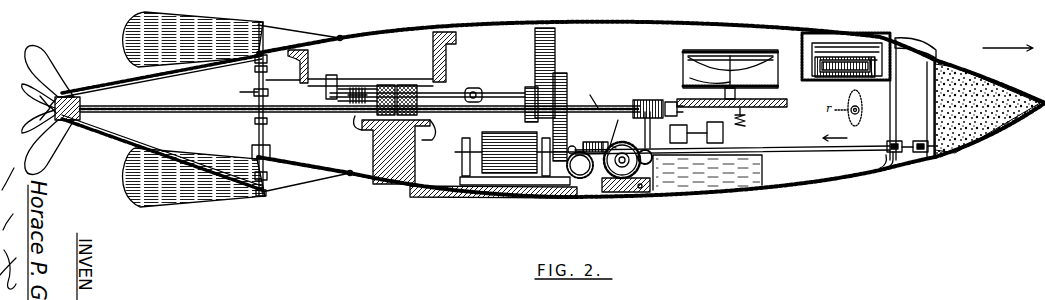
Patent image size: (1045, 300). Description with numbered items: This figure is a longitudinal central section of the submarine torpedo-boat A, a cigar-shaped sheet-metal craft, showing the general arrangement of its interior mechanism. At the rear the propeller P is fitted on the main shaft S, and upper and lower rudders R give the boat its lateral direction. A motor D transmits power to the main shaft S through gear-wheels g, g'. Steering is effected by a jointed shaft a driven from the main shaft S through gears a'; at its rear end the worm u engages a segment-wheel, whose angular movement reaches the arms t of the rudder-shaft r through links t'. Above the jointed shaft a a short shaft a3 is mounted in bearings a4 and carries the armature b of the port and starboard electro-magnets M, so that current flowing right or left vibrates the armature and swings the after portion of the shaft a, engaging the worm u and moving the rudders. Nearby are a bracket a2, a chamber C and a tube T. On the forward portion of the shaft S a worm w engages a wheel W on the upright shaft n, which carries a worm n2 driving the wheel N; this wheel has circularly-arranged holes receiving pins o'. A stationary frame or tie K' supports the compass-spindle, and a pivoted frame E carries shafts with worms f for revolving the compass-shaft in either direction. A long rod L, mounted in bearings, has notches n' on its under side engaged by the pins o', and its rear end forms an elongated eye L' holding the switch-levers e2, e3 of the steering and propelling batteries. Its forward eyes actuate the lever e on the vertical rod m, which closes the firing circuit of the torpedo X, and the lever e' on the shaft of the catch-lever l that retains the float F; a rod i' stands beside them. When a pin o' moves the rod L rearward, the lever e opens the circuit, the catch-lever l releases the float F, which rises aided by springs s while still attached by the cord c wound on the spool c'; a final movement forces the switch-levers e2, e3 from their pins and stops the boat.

The submarine torpedo-boat A is at (498, 100).
The torpedo X is at (988, 142).
The propeller P is at (51, 110).
The rudders R is at (194, 109).
The main shaft S is at (360, 102).
The rudder-shaft r is at (264, 137).
The arms of the rudder-shaft t is at (241, 91).
The links t' is at (283, 75).
The bearings a4 is at (432, 50).
The jointed shaft a is at (425, 88).
The worm or screw u is at (352, 102).
The short shaft a3 is at (357, 88).
The armature b is at (385, 84).
The electro-magnets M is at (408, 84).
The motor D is at (506, 130).
The gears a' is at (526, 101).
The rack a2 is at (536, 50).
The gear-wheel g is at (573, 125).
The gear-wheel g' is at (576, 136).
The switch-lever of the steering battery e2 is at (593, 137).
The switch-lever of the propelling battery e3 is at (607, 137).
The enlarged and elongated eye L' is at (586, 95).
The wheel N is at (622, 167).
The worm n2 is at (652, 158).
The notches n' is at (615, 110).
The upright shaft n is at (638, 130).
The pins o' is at (654, 204).
The wheel W is at (640, 100).
The worm w is at (662, 100).
The stationary frame or tie K' is at (741, 106).
The chamber C is at (740, 55).
The tube T is at (690, 78).
The pivoted frame E is at (694, 130).
The worm f is at (746, 124).
The long rod or connection L is at (732, 143).
The float F is at (833, 48).
The light wire or cord c is at (845, 76).
The spool c' is at (845, 77).
The springs s is at (874, 78).
The vertical rod i' is at (902, 100).
The catch-lever l is at (899, 39).
The vertical rod m is at (934, 117).
The lever e' is at (887, 145).
The lever e is at (918, 137).